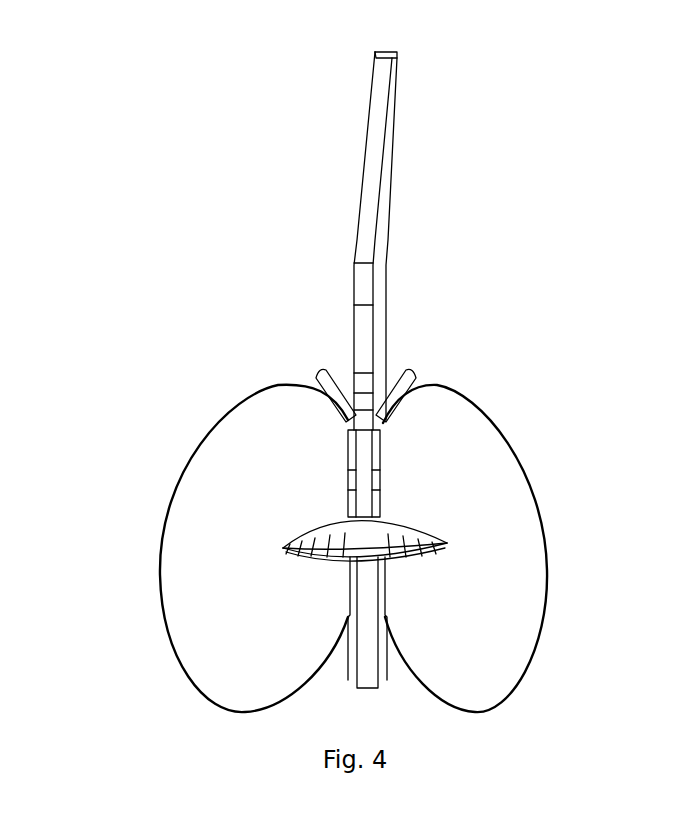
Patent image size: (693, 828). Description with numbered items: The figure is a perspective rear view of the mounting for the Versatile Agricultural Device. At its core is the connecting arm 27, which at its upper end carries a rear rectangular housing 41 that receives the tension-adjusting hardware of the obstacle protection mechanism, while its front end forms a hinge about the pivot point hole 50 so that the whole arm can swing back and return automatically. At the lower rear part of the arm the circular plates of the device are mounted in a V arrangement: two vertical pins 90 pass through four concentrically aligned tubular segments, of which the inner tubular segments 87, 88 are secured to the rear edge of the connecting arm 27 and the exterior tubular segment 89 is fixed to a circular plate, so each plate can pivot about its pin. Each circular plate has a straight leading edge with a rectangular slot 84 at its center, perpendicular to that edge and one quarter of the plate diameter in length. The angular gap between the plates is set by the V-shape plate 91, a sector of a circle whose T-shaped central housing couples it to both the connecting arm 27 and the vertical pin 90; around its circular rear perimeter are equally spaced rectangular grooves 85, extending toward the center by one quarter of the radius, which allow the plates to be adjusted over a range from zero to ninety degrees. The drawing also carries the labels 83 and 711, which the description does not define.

The pivot point hole 50 is at (396, 102).
The connecting arm 27 is at (378, 165).
The rear rectangular housing 41 is at (376, 307).
The vertical pin 90 is at (320, 375).
The V-shape plate 91 is at (377, 527).
The disc rim 83 is at (405, 527).
The rectangular slot 84 is at (317, 527).
The groove 85 is at (348, 445).
The inner tubular aligned segment 87 is at (348, 488).
The inner tubular aligned segment 88 is at (350, 565).
The exterior tubular aligned segment 89 is at (352, 598).
The lobe 711 is at (240, 657).